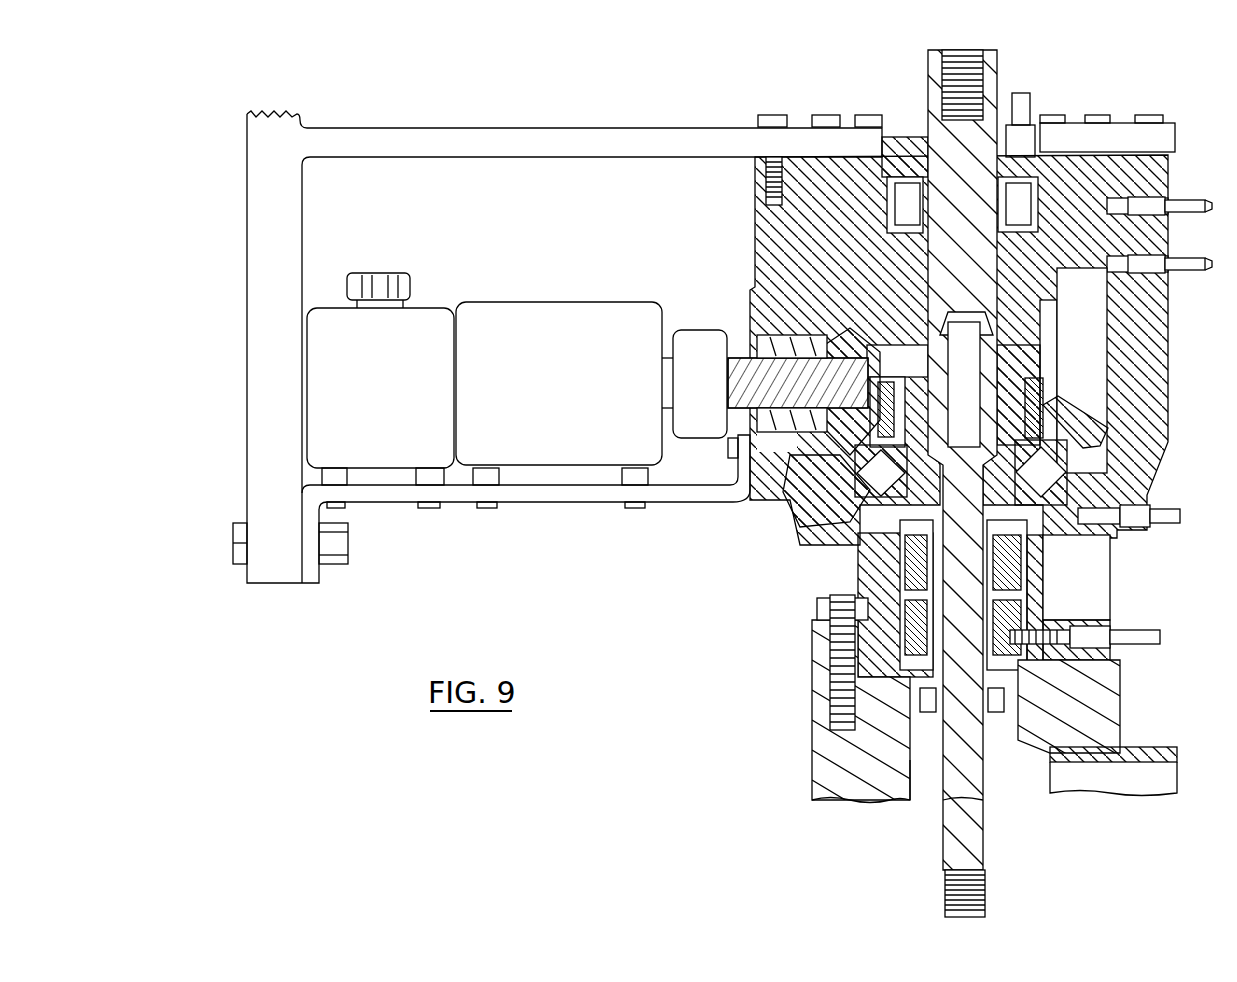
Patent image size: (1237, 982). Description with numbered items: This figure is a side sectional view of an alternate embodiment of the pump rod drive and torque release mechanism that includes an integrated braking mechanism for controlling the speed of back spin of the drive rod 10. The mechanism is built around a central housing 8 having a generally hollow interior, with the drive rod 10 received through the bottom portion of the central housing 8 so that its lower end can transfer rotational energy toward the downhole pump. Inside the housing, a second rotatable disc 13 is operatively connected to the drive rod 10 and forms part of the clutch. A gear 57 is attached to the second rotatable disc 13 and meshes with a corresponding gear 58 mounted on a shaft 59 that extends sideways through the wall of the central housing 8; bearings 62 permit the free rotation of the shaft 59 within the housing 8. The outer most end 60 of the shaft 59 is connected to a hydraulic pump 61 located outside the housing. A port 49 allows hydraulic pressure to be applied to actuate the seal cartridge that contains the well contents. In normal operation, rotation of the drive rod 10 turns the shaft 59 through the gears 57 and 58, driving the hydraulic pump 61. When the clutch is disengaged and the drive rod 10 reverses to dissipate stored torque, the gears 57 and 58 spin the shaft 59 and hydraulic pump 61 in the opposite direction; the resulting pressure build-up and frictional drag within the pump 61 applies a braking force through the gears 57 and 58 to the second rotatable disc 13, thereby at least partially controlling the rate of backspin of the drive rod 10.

The central housing 8 is at (1153, 290).
The drive rod 10 is at (975, 841).
The second rotatable disc 13 is at (1048, 362).
The port 49 is at (1160, 636).
The gear 57 is at (1080, 423).
The gear 58 is at (778, 468).
The shaft 59 is at (742, 376).
The outer most end 60 is at (742, 402).
The hydraulic pump 61 is at (572, 415).
The bearings 62 is at (752, 342).